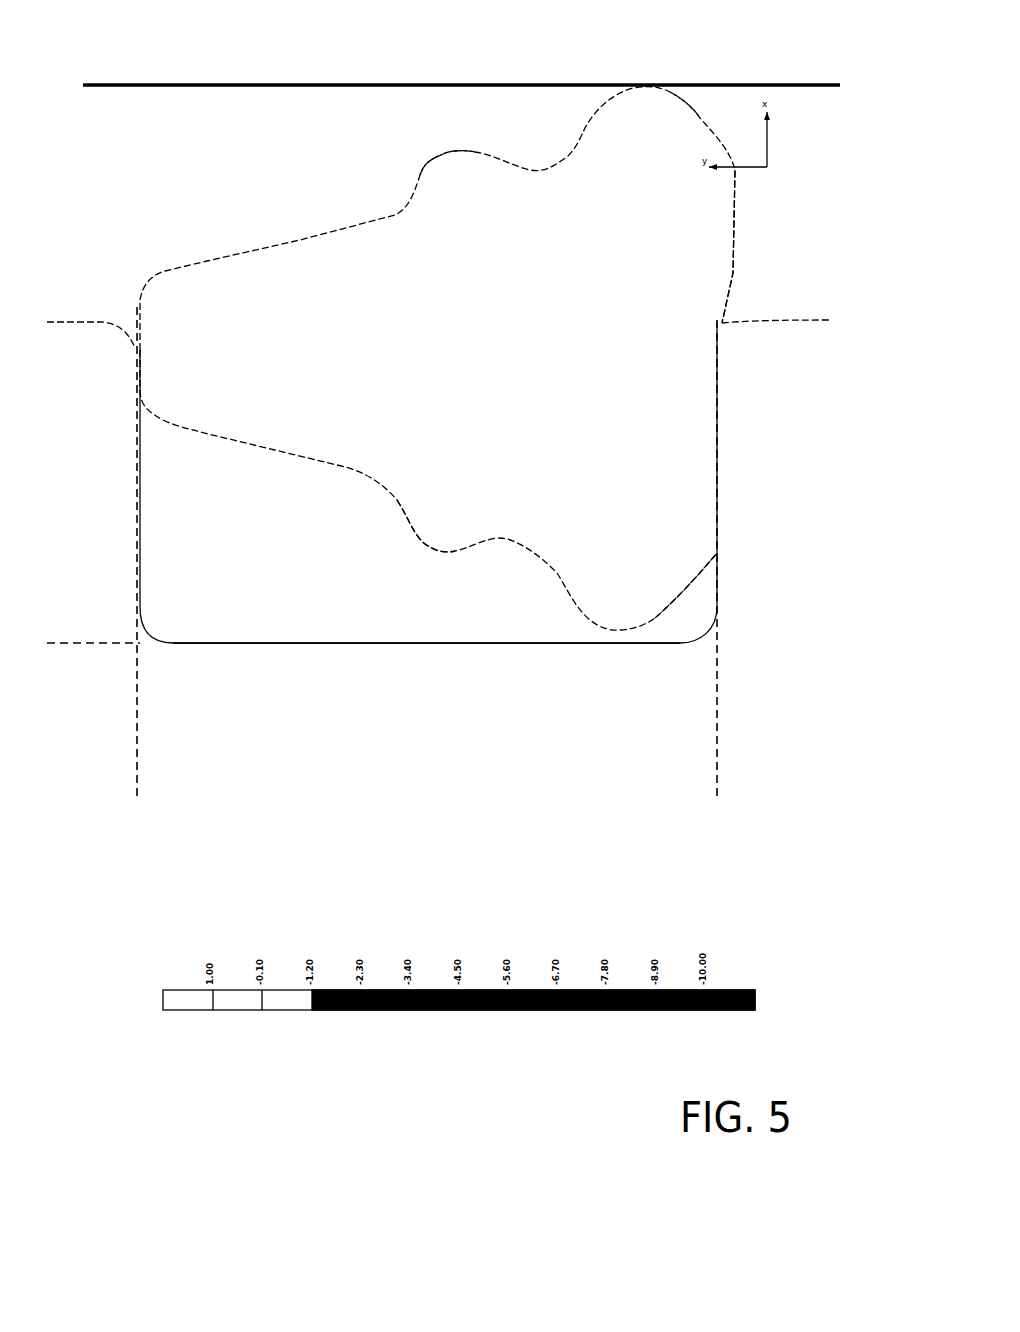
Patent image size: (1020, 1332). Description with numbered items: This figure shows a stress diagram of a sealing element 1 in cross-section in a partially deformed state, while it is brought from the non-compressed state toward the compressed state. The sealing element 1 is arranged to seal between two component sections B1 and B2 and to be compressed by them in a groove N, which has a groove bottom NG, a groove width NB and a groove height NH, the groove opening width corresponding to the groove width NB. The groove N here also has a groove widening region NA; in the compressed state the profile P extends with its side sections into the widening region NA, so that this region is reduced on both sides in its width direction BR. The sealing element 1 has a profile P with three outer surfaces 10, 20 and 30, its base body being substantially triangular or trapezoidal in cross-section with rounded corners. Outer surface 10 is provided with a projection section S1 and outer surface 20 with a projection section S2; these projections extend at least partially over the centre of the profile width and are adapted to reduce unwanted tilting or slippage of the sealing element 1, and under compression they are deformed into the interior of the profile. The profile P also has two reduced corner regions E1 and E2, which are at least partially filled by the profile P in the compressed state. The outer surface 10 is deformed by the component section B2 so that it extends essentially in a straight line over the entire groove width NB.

The sealing element 1 is at (183, 180).
The outer surface 10 is at (300, 242).
The outer surface 20 is at (337, 465).
The outer surface 30 is at (737, 272).
The projection section S1 is at (437, 160).
The projection section S2 is at (430, 547).
The component section B1 is at (717, 580).
The component section B2 is at (478, 85).
The reduced corner region E1 is at (697, 117).
The reduced corner region E2 is at (672, 601).
The groove widening region NA is at (117, 322).
The groove bottom NG is at (490, 643).
The groove N is at (228, 580).
The groove width NB is at (717, 793).
The groove height NH is at (68, 323).
The width direction BR is at (237, 241).
The profile P is at (479, 426).